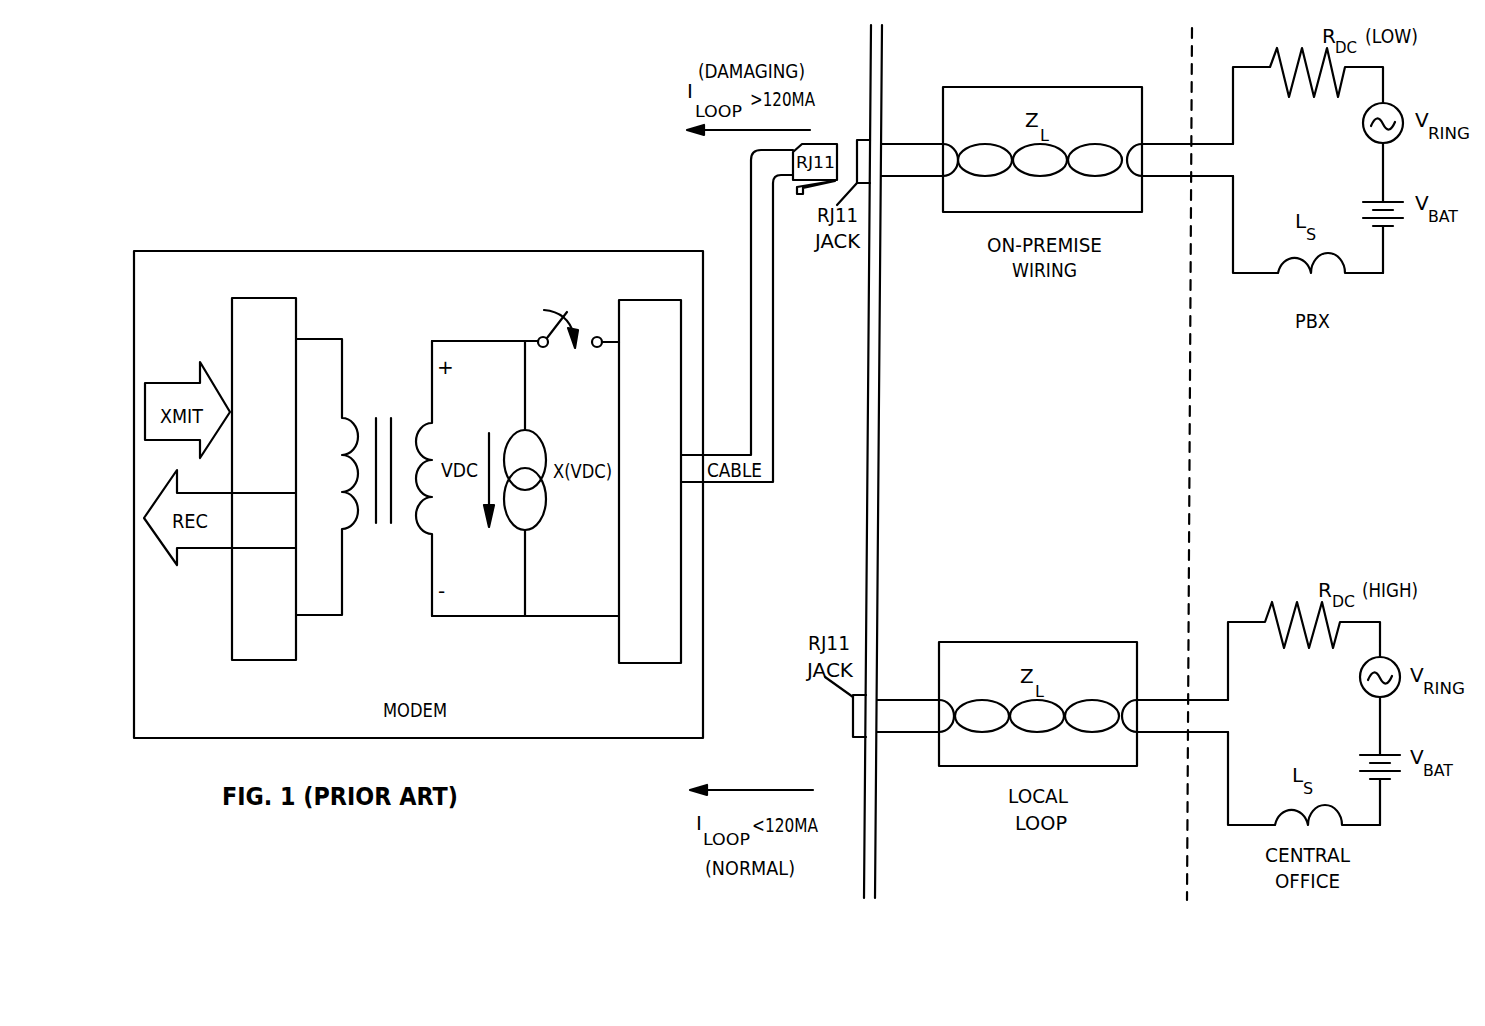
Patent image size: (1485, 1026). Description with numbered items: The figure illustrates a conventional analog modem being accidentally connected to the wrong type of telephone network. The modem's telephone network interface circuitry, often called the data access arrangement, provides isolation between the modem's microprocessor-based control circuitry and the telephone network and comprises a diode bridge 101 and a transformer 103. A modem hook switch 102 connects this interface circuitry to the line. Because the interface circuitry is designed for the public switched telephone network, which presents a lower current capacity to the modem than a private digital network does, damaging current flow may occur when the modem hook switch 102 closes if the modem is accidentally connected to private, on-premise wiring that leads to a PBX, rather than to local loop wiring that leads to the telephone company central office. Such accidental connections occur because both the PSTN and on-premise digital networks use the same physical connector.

The diode bridge 101 is at (663, 476).
The modem hook switch 102 is at (544, 310).
The transformer 103 is at (383, 416).